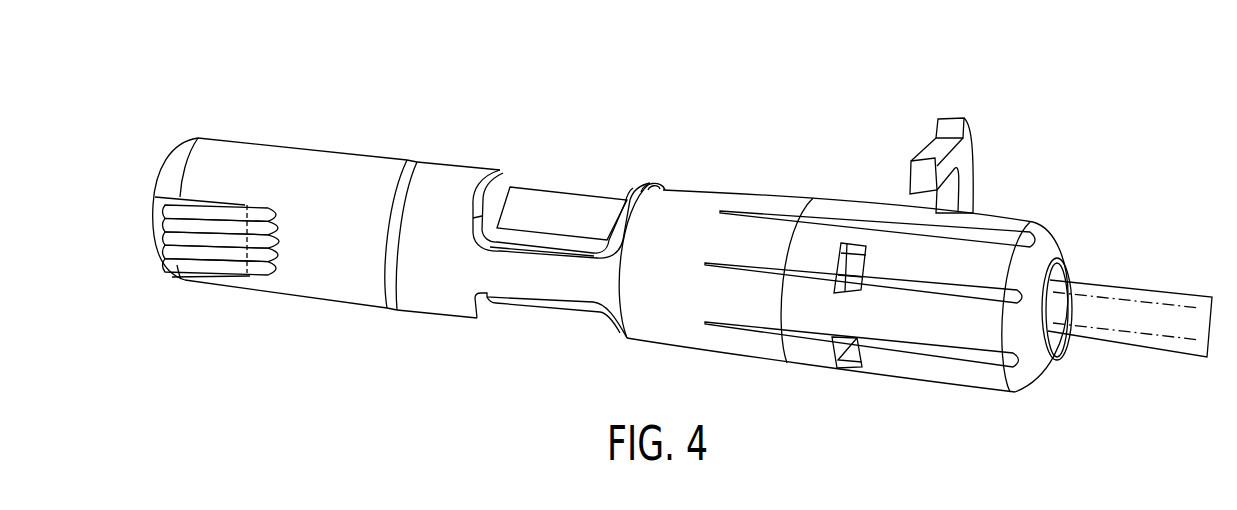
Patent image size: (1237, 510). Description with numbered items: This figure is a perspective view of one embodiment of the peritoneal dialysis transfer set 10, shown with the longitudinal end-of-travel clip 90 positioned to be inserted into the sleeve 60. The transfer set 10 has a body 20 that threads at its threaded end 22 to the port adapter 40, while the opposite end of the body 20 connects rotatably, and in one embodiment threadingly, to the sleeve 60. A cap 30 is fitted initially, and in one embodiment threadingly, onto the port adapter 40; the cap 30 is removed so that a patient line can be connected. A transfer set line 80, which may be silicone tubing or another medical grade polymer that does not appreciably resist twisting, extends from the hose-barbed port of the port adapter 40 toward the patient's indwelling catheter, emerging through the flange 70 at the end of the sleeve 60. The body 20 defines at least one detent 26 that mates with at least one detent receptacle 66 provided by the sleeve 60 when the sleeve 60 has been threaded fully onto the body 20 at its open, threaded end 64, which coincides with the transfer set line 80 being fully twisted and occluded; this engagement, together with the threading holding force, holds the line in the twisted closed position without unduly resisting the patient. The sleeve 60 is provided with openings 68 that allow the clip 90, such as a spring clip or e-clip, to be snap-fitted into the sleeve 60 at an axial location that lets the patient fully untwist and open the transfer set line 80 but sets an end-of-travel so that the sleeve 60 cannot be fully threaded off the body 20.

The PD transfer set 10 is at (775, 122).
The body 20 is at (512, 163).
The threaded end 22 is at (432, 162).
The detent 26 is at (643, 190).
The cap 30 is at (163, 140).
The port adapter 40 is at (390, 318).
The sleeve 60 is at (1058, 219).
The open end 64 is at (643, 327).
The detent receptacle 66 is at (663, 186).
The openings 68 is at (850, 247).
The flange 70 is at (1067, 270).
The transfer set line 80 is at (1130, 292).
The clip 90 is at (972, 125).